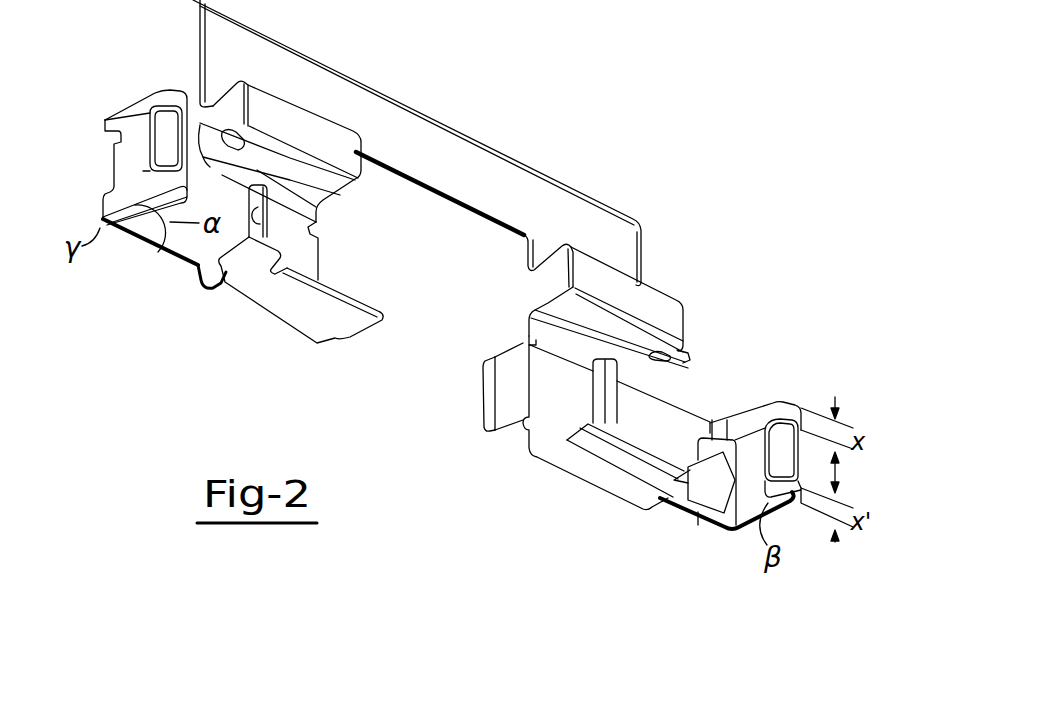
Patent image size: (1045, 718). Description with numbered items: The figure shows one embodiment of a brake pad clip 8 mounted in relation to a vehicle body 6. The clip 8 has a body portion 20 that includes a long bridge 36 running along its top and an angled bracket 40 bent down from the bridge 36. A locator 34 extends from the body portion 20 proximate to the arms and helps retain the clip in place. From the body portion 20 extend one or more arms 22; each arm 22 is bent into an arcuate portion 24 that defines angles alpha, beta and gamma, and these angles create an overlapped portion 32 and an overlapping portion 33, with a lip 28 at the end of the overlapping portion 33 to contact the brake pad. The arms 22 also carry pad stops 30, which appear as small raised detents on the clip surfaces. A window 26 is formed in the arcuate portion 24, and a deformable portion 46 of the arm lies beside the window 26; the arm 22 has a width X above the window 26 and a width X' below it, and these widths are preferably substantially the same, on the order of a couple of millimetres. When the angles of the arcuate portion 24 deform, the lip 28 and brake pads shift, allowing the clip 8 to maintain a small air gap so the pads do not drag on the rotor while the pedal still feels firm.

The vehicle body 6 is at (718, 2).
The clip 8 is at (656, 178).
The body portion 20 is at (307, 258).
The arms 22 is at (156, 293).
The arcuate portions 24 is at (720, 422).
The windows 26 is at (163, 147).
The lip 28 is at (318, 228).
The pad stops 30 is at (223, 135).
The overlapped portion 32 is at (167, 255).
The overlapping portion 33 is at (186, 266).
The locators 34 is at (487, 408).
The bridge 36 is at (468, 157).
The angled bracket 40 is at (327, 137).
The deformable portion 46 is at (150, 84).